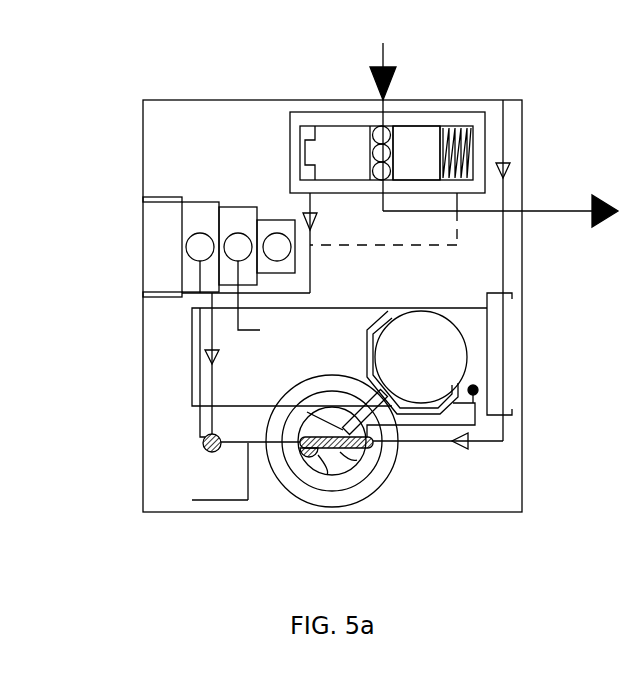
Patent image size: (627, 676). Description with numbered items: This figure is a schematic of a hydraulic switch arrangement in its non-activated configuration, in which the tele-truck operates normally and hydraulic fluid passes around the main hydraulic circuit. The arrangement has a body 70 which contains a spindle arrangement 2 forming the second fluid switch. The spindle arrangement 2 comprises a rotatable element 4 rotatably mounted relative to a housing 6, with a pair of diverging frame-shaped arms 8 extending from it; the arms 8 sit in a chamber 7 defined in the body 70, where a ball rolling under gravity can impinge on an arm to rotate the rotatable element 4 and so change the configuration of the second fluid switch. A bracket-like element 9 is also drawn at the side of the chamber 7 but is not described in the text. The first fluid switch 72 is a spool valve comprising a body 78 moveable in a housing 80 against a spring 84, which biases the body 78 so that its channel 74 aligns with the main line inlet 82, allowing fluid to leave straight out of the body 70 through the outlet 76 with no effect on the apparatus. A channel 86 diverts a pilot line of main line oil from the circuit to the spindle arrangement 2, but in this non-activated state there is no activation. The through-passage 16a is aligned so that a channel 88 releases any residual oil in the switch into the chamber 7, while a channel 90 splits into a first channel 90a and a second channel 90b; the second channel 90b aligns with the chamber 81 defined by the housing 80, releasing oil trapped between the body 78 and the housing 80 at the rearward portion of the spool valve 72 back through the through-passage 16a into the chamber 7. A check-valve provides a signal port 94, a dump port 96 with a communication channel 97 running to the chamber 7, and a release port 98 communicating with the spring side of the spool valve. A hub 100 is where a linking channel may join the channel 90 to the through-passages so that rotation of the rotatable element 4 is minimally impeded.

The spindle arrangement 2 is at (283, 485).
The rotatable element 4 is at (317, 463).
The housing 6 is at (357, 483).
The chamber 7 is at (470, 352).
The arms 8 is at (372, 343).
The bracket 9 is at (512, 432).
The through-passage 16a is at (277, 450).
The body 70 is at (523, 490).
The first fluid switch 72 is at (330, 105).
The channel 74 is at (378, 125).
The outlet 76 is at (527, 211).
The body 78 is at (418, 138).
The housing 80 is at (477, 123).
The chamber 81 is at (305, 125).
The main line inlet 82 is at (398, 100).
The spring 84 is at (460, 167).
The channel 86 is at (487, 100).
The channel 88 is at (443, 430).
The channel 90 is at (210, 503).
The first channel 90a is at (203, 443).
The second channel 90b is at (202, 417).
The signal port 94 is at (198, 233).
The dump port 96 is at (235, 235).
The communication channel 97 is at (240, 300).
The release port 98 is at (280, 252).
The hub 100 is at (205, 447).